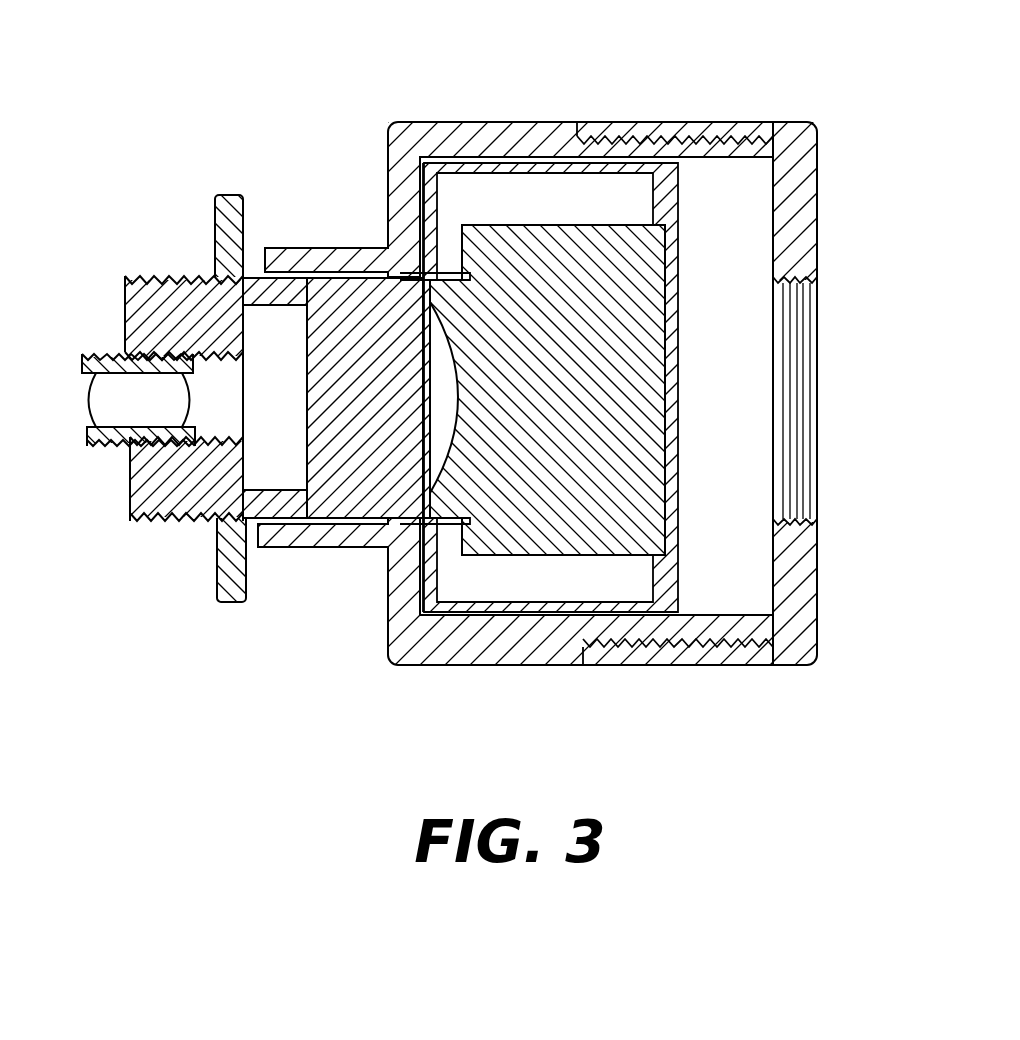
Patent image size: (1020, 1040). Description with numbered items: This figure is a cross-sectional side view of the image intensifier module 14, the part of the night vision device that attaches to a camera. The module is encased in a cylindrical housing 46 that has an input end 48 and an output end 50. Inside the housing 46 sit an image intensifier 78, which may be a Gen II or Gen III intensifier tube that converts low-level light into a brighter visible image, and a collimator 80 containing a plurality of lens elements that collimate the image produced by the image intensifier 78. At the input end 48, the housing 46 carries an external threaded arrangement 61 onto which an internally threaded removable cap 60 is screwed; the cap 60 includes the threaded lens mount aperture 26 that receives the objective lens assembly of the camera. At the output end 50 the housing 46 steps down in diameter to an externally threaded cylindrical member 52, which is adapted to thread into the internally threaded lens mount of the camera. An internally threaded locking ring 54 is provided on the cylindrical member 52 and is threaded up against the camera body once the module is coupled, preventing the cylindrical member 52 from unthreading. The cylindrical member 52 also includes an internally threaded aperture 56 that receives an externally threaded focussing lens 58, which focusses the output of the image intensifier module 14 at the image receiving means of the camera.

The image intensifier module 14 is at (452, 95).
The cylindrical housing 46 is at (550, 122).
The input end 48 is at (833, 662).
The removable cap 60 is at (800, 122).
The external threaded arrangement 61 is at (733, 150).
The threaded lens mount aperture 26 is at (805, 286).
The image intensifier 78 is at (598, 400).
The collimator 80 is at (305, 427).
The internally threaded aperture 56 is at (228, 356).
The externally threaded cylindrical member 52 is at (163, 280).
The output end 50 is at (130, 525).
The locking ring 54 is at (237, 606).
The focussing lens 58 is at (90, 445).